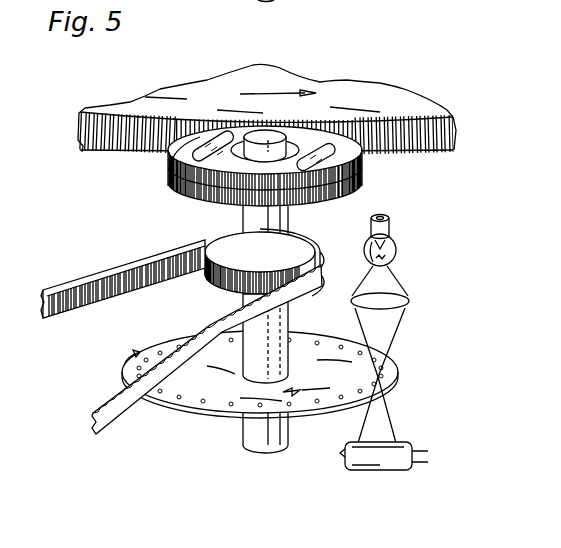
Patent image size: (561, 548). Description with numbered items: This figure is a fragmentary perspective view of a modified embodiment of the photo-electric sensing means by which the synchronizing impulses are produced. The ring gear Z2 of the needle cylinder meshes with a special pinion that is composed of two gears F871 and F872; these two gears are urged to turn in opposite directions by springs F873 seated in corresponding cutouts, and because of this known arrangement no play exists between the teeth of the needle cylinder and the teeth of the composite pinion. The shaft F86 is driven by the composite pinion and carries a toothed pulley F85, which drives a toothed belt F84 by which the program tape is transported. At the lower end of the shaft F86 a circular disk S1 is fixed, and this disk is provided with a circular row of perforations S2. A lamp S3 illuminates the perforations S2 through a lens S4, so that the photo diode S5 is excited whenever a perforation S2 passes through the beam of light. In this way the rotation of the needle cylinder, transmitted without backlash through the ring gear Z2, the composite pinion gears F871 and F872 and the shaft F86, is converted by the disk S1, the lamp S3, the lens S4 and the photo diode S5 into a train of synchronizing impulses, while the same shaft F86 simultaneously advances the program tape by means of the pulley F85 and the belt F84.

The ring gear Z2 is at (452, 134).
The gear F871 is at (362, 158).
The gear F872 is at (362, 180).
The springs F873 is at (205, 146).
The toothed belt F84 is at (90, 282).
The toothed pulley F85 is at (228, 240).
The shaft F86 is at (250, 436).
The circular disk S1 is at (312, 404).
The perforations S2 is at (396, 378).
The lamp S3 is at (397, 250).
The lens S4 is at (405, 303).
The photo diode S5 is at (388, 472).